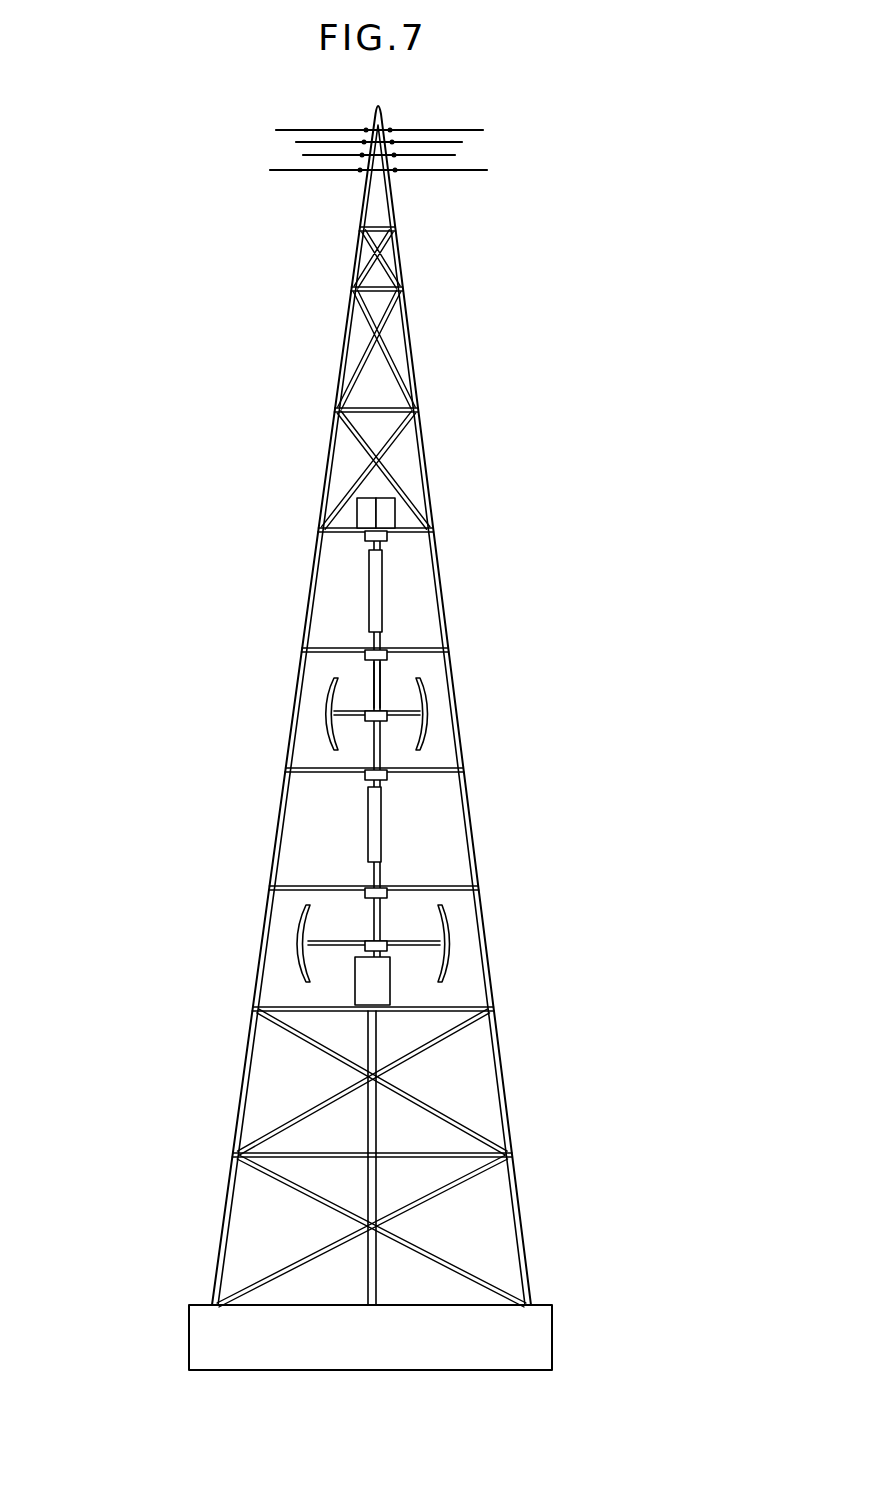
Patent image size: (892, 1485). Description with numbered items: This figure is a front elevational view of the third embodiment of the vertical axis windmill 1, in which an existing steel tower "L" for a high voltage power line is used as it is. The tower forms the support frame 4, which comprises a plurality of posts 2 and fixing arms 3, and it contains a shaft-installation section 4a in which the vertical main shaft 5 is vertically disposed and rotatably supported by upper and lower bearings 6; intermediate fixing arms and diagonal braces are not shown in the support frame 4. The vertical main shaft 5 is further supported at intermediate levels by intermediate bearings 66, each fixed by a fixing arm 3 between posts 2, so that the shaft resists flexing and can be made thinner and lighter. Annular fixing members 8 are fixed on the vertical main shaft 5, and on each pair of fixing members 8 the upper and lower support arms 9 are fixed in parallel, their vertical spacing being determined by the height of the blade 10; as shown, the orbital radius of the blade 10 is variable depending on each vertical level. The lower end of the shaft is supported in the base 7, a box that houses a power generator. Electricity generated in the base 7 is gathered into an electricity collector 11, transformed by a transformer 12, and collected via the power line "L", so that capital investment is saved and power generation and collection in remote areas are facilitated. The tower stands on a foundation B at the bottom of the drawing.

The vertical axis windmill 1 is at (460, 242).
The post 2 is at (345, 346).
The fixing arm 3 is at (410, 533).
The support frame 4 is at (222, 1190).
The shaft-installation section 4a is at (428, 1295).
The vertical main shaft 5 is at (381, 638).
The bearing 6 is at (365, 540).
The base 7 is at (392, 986).
The fixing member 8 is at (358, 720).
The support arm 9 is at (357, 708).
The blade 10 is at (383, 592).
The electricity collector 11 is at (358, 508).
The transformer 12 is at (395, 513).
The intermediate bearing 66 is at (387, 656).
The steel tower for high voltage power line L is at (320, 170).
The foundation B is at (538, 1305).